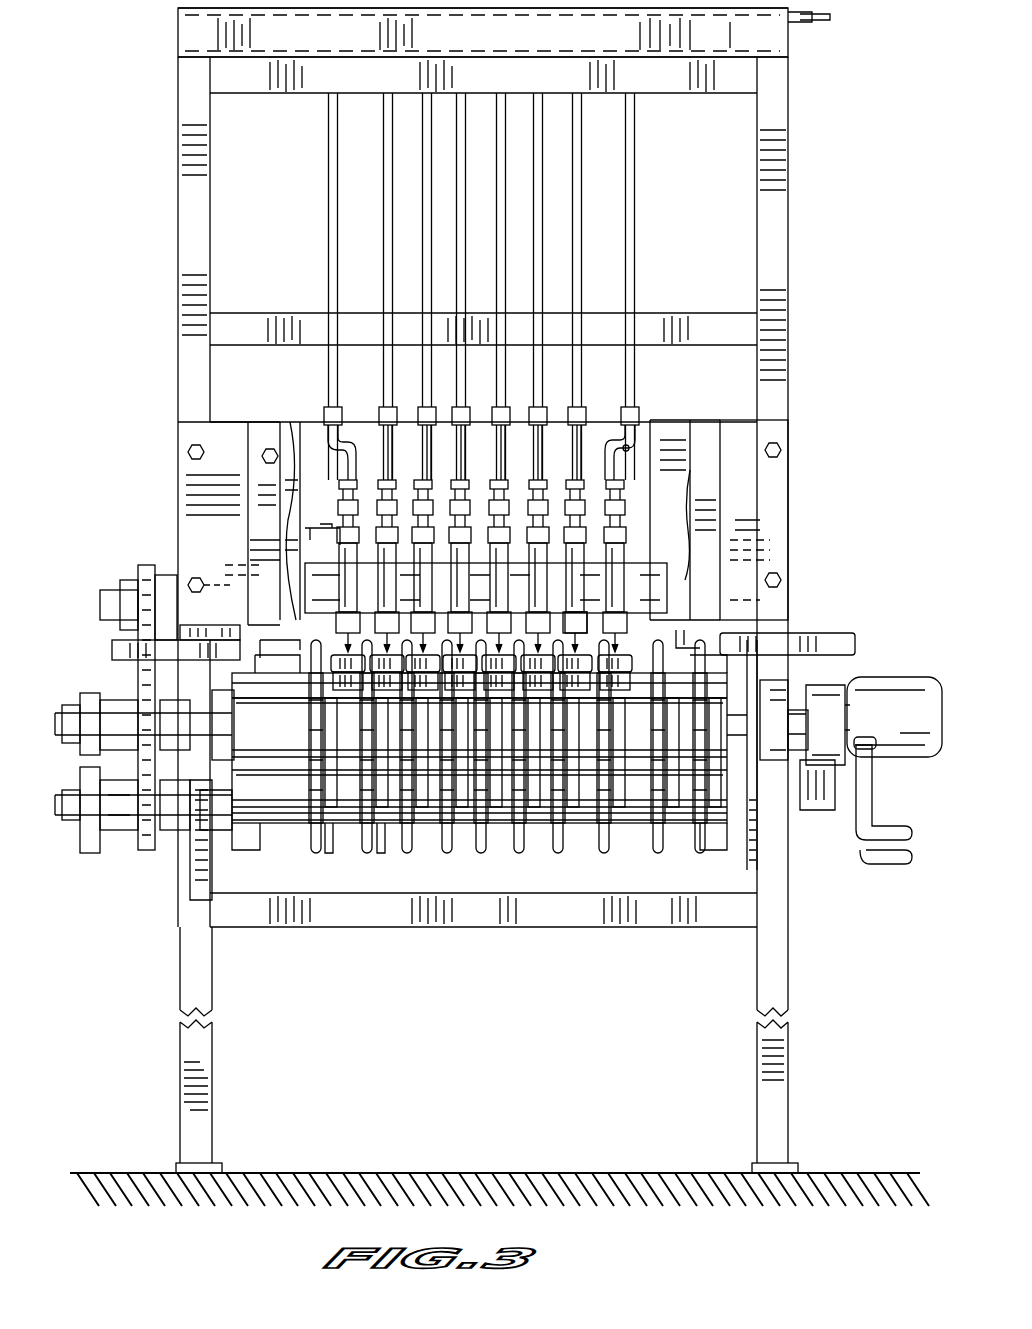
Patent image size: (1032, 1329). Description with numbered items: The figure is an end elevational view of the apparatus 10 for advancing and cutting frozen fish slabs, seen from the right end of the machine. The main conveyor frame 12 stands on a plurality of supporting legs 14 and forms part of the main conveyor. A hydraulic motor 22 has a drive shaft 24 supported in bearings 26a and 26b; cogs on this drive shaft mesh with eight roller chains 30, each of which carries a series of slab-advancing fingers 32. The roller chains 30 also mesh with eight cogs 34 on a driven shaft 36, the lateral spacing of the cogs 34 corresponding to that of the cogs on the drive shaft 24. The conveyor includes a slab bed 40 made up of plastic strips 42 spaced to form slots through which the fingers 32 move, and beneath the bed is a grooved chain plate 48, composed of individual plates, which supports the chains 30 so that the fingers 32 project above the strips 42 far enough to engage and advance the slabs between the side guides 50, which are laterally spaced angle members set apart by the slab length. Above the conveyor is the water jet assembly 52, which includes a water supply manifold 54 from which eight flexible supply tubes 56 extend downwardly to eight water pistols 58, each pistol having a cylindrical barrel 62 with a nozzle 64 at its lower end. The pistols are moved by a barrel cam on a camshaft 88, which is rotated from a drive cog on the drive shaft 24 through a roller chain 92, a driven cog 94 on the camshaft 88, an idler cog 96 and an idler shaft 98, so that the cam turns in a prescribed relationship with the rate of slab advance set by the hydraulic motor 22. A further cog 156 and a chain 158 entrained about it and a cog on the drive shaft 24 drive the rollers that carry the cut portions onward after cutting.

The apparatus 10 is at (792, 268).
The main conveyor frame 12 is at (372, 932).
The supporting legs 14 is at (214, 1118).
The hydraulic motor 22 is at (898, 672).
The drive shaft 24 is at (60, 716).
The bearing 26a is at (790, 870).
The bearing 26b is at (200, 900).
The roller chain 30 is at (588, 840).
The slab-advancing fingers 32 is at (488, 845).
The cogs 34 is at (310, 722).
The driven shaft 36 is at (712, 760).
The slab bed 40 is at (483, 550).
The plastic strips 42 is at (344, 628).
The grooved chain plate 48 is at (244, 680).
The side guides 50 is at (290, 642).
The water jet assembly 52 is at (655, 498).
The water supply manifold 54 is at (180, 38).
The flexible supply tubes 56 is at (492, 125).
The water pistols 58 is at (330, 470).
The cylindrical barrel 62 is at (340, 575).
The nozzle 64 is at (612, 636).
The camshaft 88 is at (110, 598).
The roller chain 92 is at (140, 632).
The driven cog 94 is at (140, 572).
The idler cog 96 is at (160, 832).
The idler shaft 98 is at (176, 835).
The cog 156 is at (108, 832).
The chain 158 is at (75, 822).